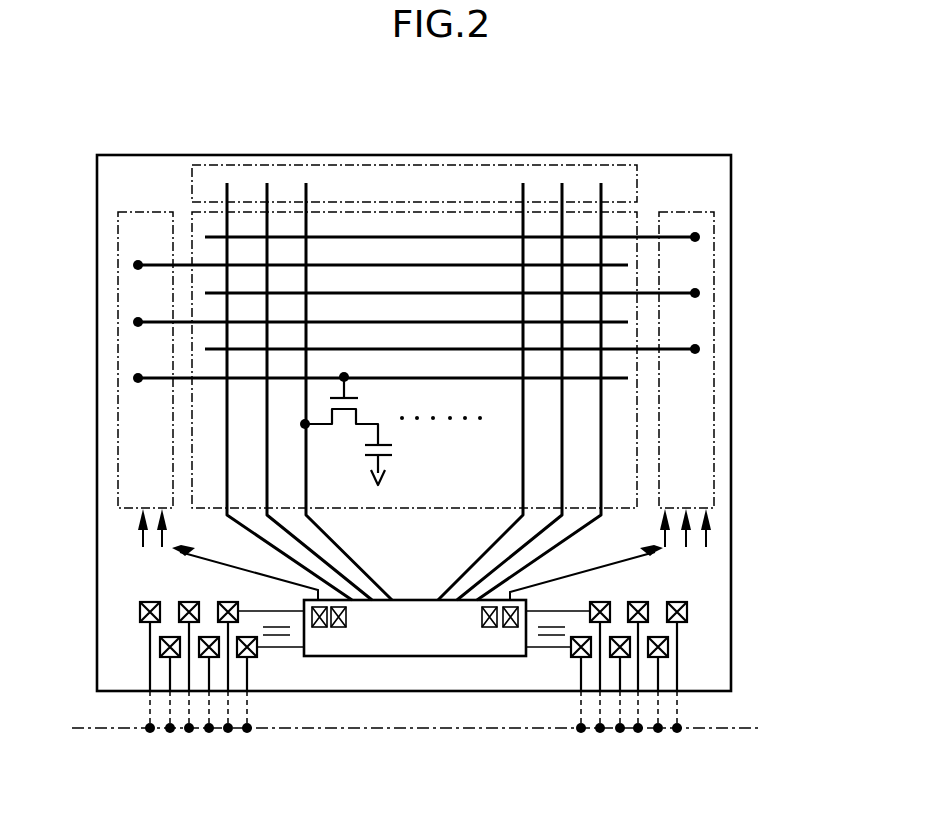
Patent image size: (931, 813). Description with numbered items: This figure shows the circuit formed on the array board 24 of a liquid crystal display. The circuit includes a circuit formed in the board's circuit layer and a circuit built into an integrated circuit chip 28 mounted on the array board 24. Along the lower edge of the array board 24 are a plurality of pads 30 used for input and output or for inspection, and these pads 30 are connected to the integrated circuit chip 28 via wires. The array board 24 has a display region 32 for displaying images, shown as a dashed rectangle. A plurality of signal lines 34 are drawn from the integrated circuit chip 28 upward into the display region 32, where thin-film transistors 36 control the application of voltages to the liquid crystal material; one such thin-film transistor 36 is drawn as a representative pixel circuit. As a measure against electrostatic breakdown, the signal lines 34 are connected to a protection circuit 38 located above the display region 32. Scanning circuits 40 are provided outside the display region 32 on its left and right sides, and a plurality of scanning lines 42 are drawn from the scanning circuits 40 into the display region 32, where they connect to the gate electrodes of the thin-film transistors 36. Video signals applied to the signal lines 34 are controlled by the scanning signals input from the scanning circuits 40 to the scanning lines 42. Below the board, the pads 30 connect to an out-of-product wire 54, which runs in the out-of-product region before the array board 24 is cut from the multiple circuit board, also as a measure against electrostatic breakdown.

The array board 24 is at (731, 400).
The integrated circuit chip 28 is at (415, 657).
The pads 30 is at (140, 613).
The display region 32 is at (637, 222).
The signal lines 34 is at (562, 448).
The thin-film transistors 36 is at (343, 427).
The protection circuit 38 is at (412, 165).
The scanning circuits 40 is at (118, 322).
The scanning lines 42 is at (672, 235).
The out-of-product wires 54 is at (488, 730).